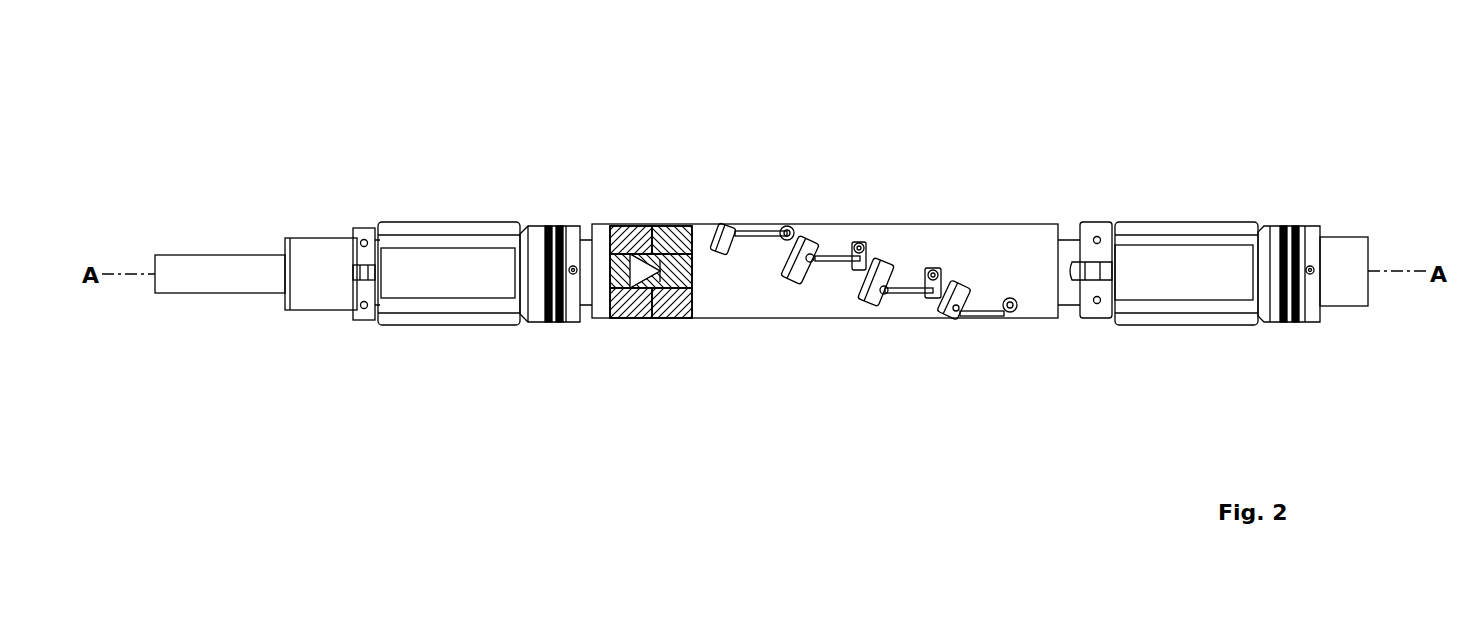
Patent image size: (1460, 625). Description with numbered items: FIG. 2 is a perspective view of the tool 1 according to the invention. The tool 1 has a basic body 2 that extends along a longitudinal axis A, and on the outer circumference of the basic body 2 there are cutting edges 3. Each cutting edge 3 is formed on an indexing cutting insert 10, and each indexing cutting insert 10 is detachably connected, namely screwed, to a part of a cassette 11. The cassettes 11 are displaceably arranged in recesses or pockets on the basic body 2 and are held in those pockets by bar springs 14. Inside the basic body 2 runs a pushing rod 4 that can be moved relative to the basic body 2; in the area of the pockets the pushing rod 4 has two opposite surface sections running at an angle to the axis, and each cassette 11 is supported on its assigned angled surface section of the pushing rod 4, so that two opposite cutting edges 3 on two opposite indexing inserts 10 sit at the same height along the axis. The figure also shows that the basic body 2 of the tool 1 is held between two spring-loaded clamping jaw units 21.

The tool 1 is at (985, 30).
The basic body 2 is at (978, 243).
The cutting edge 3 is at (632, 222).
The pushing rod 4 is at (211, 270).
The indexing cutting insert 10 is at (640, 222).
The cassette 11 is at (652, 222).
The bar spring 14 is at (675, 222).
The clamping jaw unit 21 is at (480, 225).